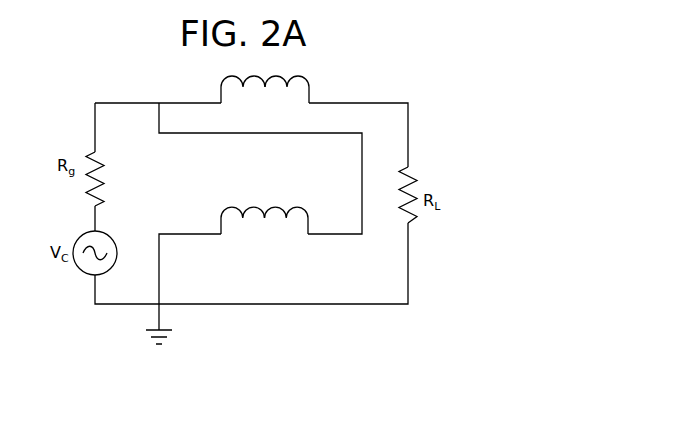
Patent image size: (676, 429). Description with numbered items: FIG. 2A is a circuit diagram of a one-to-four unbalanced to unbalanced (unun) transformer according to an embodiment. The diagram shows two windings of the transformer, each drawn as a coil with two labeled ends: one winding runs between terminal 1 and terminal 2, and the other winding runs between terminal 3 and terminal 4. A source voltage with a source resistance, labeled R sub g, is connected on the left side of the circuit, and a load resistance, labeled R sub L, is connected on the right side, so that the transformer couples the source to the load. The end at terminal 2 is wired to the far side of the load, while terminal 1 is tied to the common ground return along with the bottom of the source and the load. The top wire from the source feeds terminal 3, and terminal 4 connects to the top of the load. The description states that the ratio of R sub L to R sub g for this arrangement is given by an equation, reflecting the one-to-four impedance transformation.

The first terminal of secondary winding 1 is at (233, 220).
The second terminal of secondary winding 2 is at (296, 220).
The first terminal of primary winding 3 is at (235, 89).
The second terminal of primary winding 4 is at (296, 89).